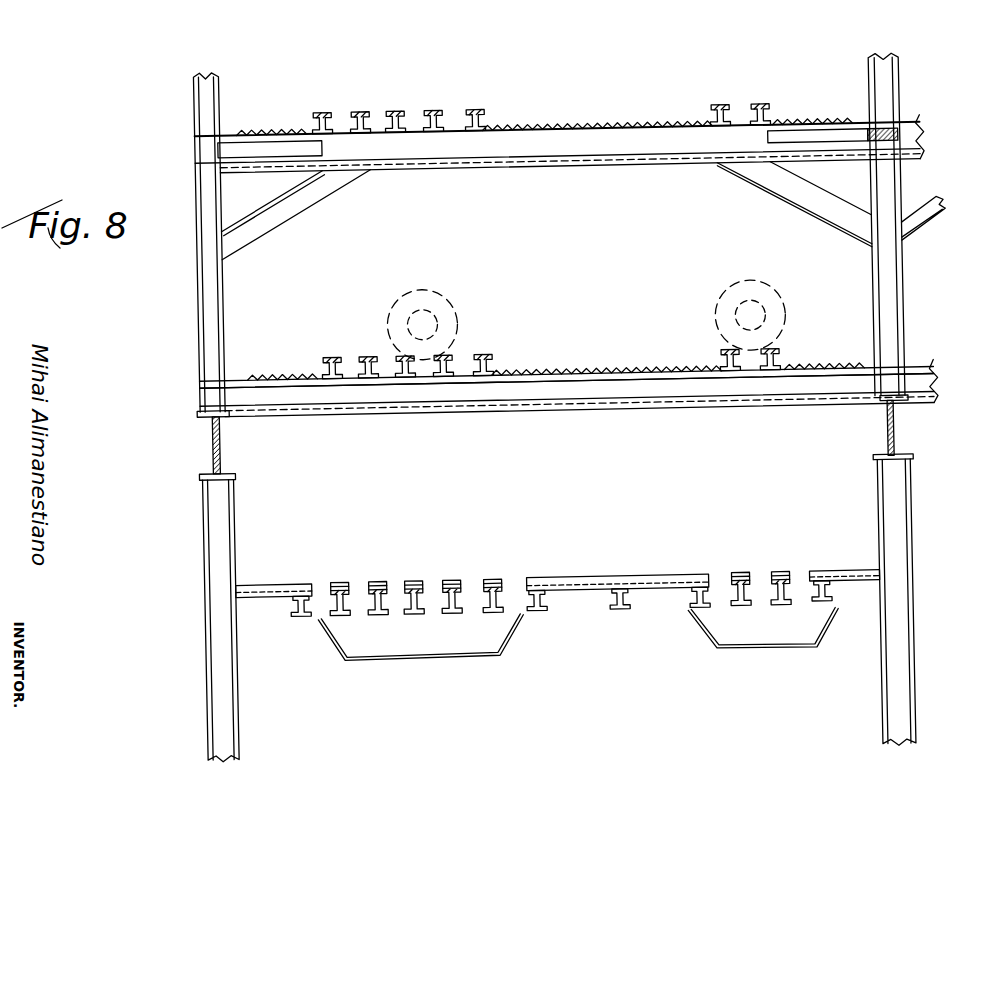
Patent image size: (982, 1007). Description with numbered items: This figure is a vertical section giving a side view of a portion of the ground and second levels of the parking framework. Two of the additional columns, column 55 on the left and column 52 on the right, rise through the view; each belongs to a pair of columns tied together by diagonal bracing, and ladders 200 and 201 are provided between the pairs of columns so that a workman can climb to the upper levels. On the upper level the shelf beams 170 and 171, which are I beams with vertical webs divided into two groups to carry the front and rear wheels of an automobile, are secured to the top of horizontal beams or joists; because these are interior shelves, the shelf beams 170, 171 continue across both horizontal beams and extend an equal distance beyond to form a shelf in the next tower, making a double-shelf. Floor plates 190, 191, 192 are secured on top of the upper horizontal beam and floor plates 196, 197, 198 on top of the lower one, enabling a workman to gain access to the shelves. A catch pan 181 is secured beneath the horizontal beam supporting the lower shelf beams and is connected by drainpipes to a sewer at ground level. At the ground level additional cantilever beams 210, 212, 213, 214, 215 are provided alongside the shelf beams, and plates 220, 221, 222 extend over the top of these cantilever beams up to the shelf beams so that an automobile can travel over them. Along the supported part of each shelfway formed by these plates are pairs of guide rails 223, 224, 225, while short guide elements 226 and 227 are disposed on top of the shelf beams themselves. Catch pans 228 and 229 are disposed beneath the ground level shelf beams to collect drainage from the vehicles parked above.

The column 52 is at (877, 286).
The column 55 is at (230, 285).
The shelf beam 170 is at (314, 61).
The shelf beam 171 is at (716, 85).
The catch pan 181 is at (560, 410).
The floor plate 190 is at (268, 122).
The floor plate 191 is at (571, 118).
The floor plate 192 is at (816, 117).
The floor plate 196 is at (268, 369).
The floor plate 197 is at (576, 368).
The floor plate 198 is at (816, 373).
The ladder 200 is at (229, 186).
The ladder 201 is at (908, 256).
The cantilever beam 210 is at (286, 597).
The cantilever beam 212 is at (533, 611).
The cantilever beam 213 is at (613, 611).
The cantilever beam 214 is at (686, 601).
The cantilever beam 215 is at (828, 595).
The plate 220 is at (244, 592).
The plate 221 is at (648, 580).
The plate 222 is at (862, 583).
The guide rail 223 is at (268, 579).
The guide rail 224 is at (564, 578).
The guide rail 225 is at (825, 573).
The short guide element 226 is at (505, 551).
The short guide element 227 is at (725, 546).
The catch pan 228 is at (330, 651).
The catch pan 229 is at (705, 651).